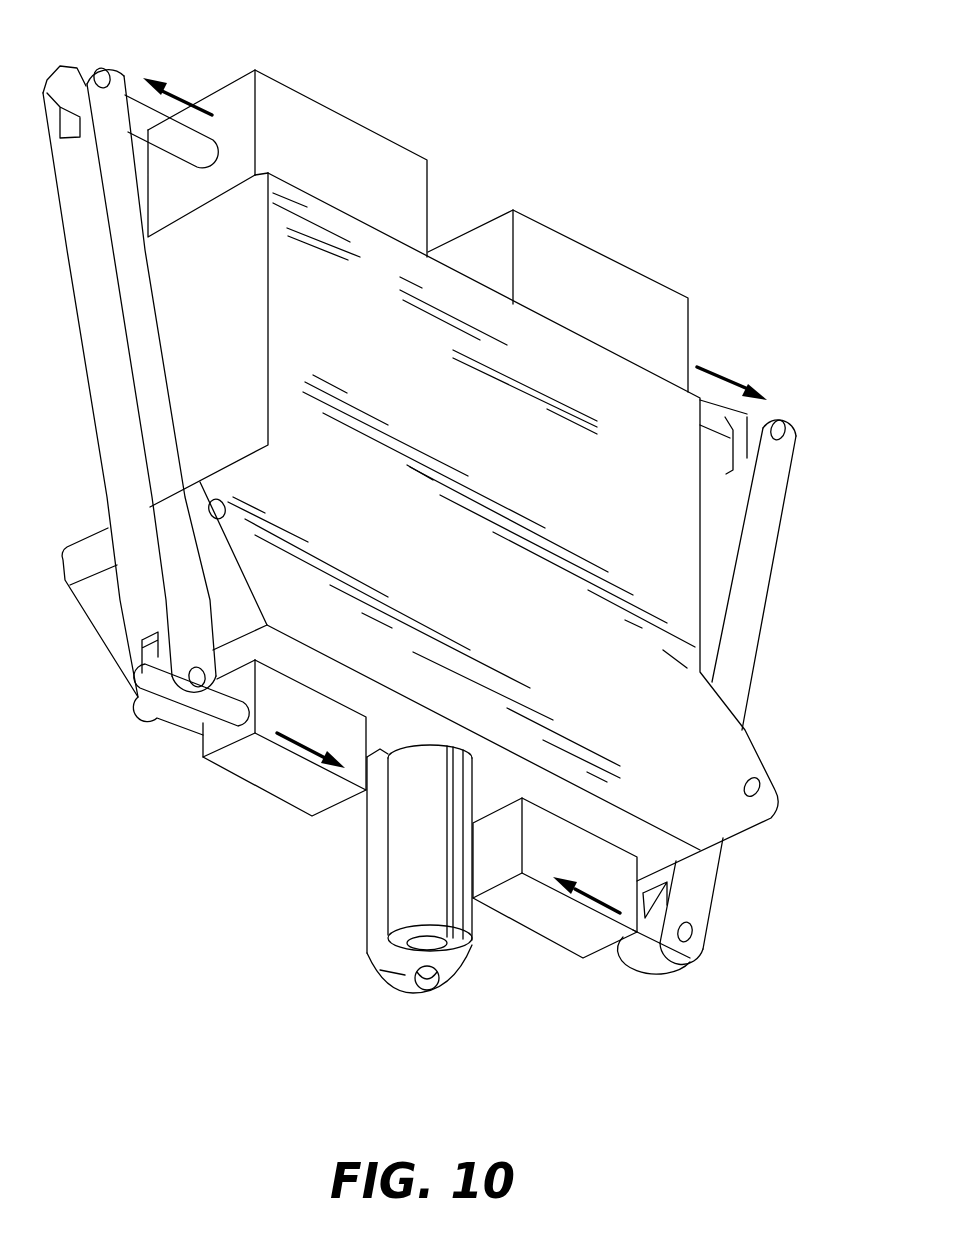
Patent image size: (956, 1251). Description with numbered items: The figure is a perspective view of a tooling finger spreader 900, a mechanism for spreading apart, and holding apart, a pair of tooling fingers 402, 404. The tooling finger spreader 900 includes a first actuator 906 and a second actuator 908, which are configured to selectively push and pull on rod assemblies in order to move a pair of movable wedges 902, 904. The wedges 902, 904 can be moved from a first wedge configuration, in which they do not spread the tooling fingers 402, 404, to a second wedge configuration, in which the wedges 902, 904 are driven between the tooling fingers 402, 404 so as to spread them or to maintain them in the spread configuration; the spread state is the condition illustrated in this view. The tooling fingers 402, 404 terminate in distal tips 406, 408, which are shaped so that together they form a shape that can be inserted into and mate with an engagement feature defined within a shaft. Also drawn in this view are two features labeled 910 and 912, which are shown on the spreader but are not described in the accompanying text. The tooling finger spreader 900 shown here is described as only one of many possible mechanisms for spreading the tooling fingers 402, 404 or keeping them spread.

The tooling finger spreader 900 is at (744, 82).
The movable wedge 902 is at (388, 790).
The movable wedge 904 is at (477, 836).
The first actuator 906 is at (347, 118).
The second actuator 908 is at (620, 260).
The first hole 910 is at (210, 510).
The second hole 912 is at (759, 784).
The tooling finger 402 is at (415, 890).
The tooling finger 404 is at (472, 932).
The distal tip 406 is at (405, 972).
The distal tip 408 is at (433, 987).